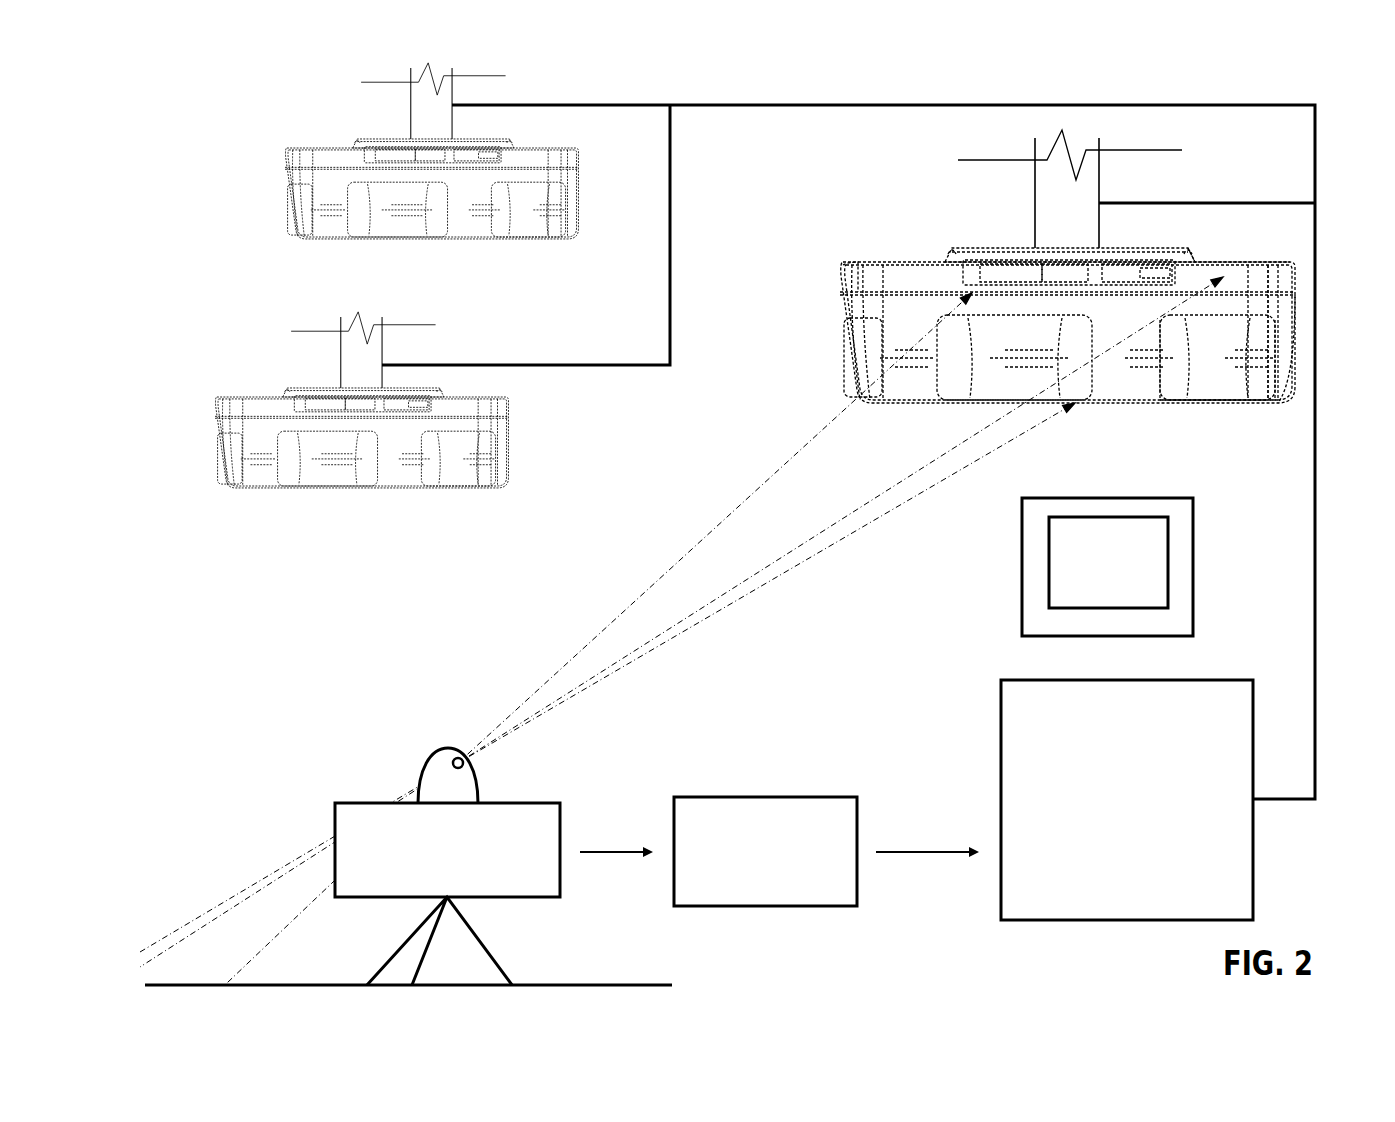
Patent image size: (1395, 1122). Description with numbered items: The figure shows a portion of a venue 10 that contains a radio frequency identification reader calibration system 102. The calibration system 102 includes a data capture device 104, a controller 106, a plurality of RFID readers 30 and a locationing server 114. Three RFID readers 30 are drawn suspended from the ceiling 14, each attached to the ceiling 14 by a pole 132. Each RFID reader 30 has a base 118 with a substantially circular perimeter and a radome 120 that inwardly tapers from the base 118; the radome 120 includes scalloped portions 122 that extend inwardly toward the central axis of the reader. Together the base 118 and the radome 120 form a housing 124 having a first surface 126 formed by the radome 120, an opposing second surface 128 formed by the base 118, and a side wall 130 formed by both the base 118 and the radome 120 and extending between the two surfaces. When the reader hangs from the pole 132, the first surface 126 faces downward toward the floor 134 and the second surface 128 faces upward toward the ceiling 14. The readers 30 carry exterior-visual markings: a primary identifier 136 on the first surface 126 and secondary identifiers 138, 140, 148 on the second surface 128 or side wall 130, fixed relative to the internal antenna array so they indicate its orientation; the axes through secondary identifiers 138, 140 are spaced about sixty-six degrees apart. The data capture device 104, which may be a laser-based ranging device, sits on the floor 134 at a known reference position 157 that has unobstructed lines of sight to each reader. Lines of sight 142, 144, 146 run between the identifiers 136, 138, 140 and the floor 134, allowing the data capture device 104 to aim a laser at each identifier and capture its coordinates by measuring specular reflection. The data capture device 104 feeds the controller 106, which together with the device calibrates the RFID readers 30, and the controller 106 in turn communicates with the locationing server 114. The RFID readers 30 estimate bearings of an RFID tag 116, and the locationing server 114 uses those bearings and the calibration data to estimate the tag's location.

The venue 10 is at (226, 110).
The RFID reader calibration system 102 is at (257, 285).
The ceiling 14 is at (360, 87).
The RFID reader 30 is at (295, 186).
The base 118 is at (572, 158).
The radome 120 is at (302, 224).
The scalloped portions 122 is at (1170, 383).
The housing 124 is at (1290, 310).
The first surface 126 is at (1225, 397).
The second surface 128 is at (1270, 262).
The side wall 130 is at (1283, 350).
The pole 132 is at (410, 118).
The primary identifier 136 is at (1020, 403).
The secondary identifier 138 is at (973, 277).
The secondary identifier 140 is at (1227, 273).
The line of sight 142 is at (795, 452).
The line of sight 144 is at (905, 497).
The line of sight 146 is at (920, 512).
The secondary identifier 148 is at (852, 278).
The data capture device 104 is at (418, 778).
The controller 106 is at (712, 797).
The locationing server 114 is at (1001, 796).
The RFID tag 116 is at (1049, 566).
The floor 134 is at (640, 985).
The reference position 157 is at (220, 983).